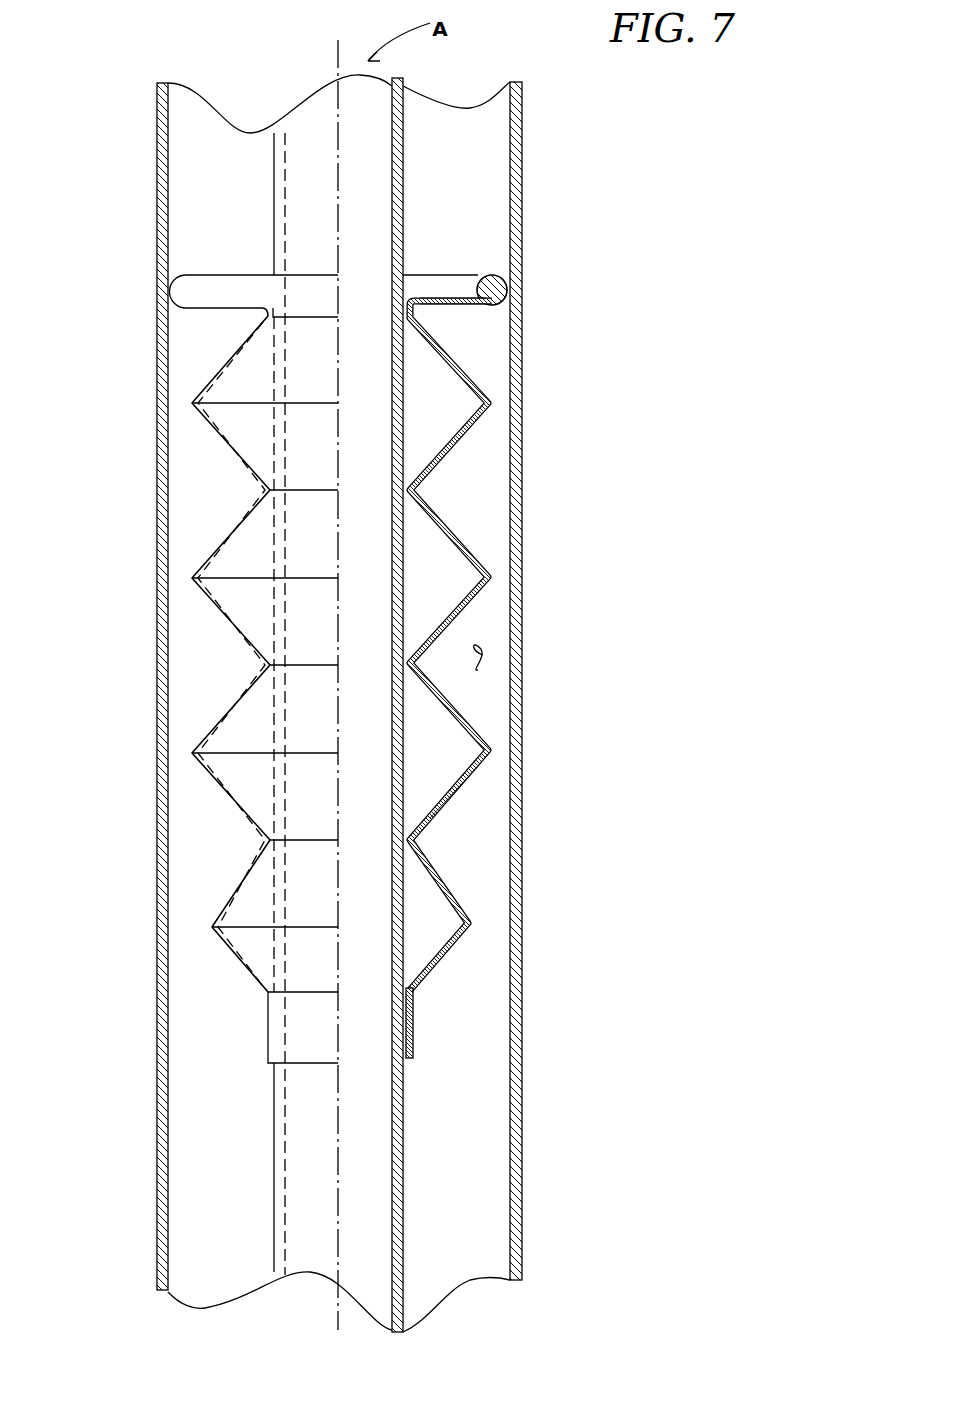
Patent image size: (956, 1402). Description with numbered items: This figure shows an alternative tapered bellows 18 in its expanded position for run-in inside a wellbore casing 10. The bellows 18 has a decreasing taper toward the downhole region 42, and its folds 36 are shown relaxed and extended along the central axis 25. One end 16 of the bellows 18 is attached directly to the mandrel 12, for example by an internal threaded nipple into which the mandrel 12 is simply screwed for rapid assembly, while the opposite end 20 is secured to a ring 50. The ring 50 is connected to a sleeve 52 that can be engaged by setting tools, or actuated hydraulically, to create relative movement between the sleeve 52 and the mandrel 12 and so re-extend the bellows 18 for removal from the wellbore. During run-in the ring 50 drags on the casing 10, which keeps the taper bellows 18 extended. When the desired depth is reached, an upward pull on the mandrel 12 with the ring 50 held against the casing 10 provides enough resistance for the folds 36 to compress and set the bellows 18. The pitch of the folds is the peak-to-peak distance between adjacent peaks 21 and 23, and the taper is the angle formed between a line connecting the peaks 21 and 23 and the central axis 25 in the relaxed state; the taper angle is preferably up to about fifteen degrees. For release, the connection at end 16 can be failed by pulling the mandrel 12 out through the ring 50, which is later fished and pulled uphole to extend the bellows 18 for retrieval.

The casing 10 is at (523, 942).
The mandrel 12 is at (405, 225).
The end 16 is at (413, 1056).
The bellows 18 is at (460, 533).
The opposite end 20 is at (478, 308).
The peak 21 is at (190, 579).
The peak 23 is at (193, 755).
The central axis 25 is at (339, 1200).
The folds 36 is at (460, 783).
The downhole region 42 is at (485, 658).
The ring 50 is at (510, 283).
The sleeve 52 is at (432, 288).